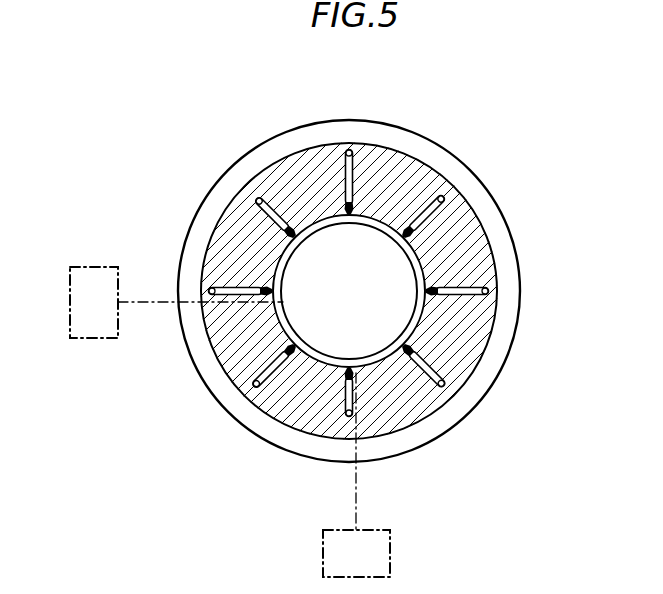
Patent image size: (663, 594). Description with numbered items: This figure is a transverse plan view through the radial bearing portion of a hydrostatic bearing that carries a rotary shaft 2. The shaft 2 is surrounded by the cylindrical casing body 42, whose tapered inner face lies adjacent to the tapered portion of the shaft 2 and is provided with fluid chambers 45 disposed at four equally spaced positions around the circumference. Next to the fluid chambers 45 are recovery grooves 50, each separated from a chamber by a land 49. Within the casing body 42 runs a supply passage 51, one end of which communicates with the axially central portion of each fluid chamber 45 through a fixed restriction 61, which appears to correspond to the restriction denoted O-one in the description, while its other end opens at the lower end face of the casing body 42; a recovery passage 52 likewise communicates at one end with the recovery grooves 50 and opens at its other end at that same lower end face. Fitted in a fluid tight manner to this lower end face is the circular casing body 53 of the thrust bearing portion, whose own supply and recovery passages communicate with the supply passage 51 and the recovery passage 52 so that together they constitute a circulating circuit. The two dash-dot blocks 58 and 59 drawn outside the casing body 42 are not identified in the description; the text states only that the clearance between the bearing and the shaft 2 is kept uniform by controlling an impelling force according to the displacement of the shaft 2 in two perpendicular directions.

The rotary shaft 2 is at (327, 333).
The cylindrical casing body 42 is at (396, 165).
The fluid chamber 45 is at (333, 213).
The land 49 is at (414, 158).
The recovery groove 50 is at (303, 228).
The supply passage 51 is at (363, 150).
The recovery passage 52 is at (446, 199).
The circular casing body 53 is at (481, 200).
The drive unit 58 is at (83, 340).
The control unit 59 is at (392, 548).
The sleeve notch 61 is at (400, 135).